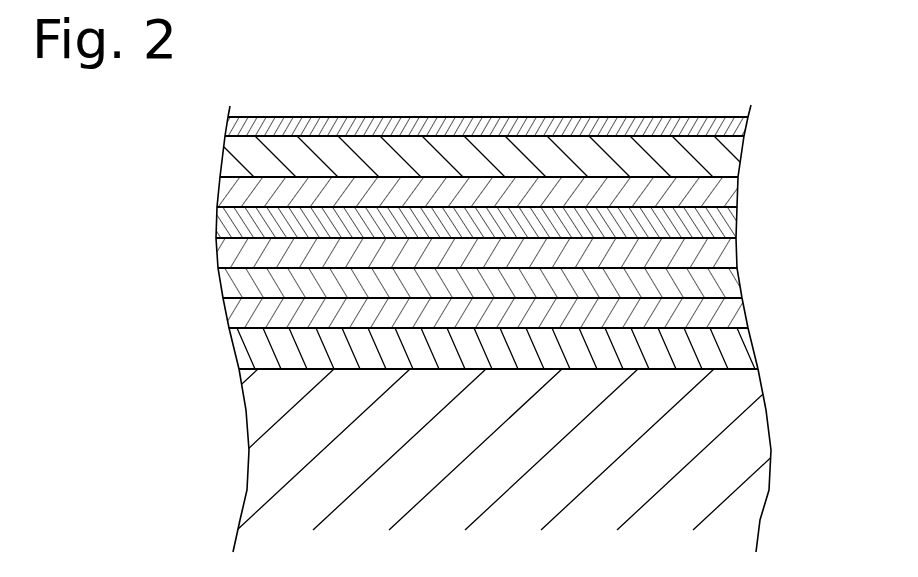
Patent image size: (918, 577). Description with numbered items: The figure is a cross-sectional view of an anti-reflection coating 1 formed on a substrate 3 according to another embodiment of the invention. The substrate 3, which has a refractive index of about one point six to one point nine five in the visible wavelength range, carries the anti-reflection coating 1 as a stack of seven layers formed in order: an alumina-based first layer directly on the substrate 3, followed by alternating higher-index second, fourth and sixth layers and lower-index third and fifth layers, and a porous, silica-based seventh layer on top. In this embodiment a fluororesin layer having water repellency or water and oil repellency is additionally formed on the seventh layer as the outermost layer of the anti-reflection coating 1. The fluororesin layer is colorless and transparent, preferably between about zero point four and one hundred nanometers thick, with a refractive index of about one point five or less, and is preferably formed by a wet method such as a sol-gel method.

The anti-reflection coating 1 is at (541, 237).
The substrate 3 is at (760, 447).